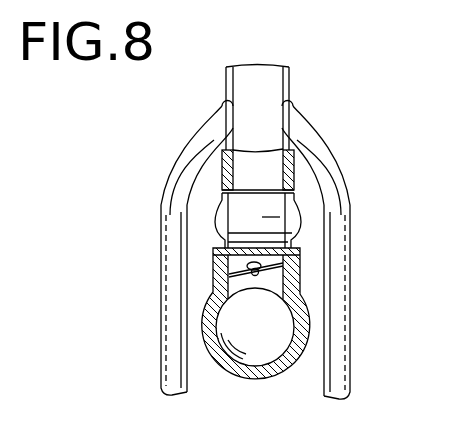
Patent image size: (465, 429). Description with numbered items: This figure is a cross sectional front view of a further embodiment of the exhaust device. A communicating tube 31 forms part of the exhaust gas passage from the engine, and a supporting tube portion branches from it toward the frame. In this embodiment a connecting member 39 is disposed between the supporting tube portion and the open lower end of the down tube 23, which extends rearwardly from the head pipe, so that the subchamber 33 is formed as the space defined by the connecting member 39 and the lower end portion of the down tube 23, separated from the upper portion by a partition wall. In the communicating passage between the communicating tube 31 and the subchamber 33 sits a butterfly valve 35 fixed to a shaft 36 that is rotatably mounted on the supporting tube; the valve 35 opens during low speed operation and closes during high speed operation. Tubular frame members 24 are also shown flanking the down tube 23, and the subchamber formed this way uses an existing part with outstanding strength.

The down tube 23 is at (289, 83).
The arms 24 is at (160, 268).
The communicating tube 31 is at (255, 379).
The subchamber 33 is at (257, 177).
The valve 35 is at (241, 282).
The shaft 36 is at (265, 282).
The connecting member 39 is at (293, 202).